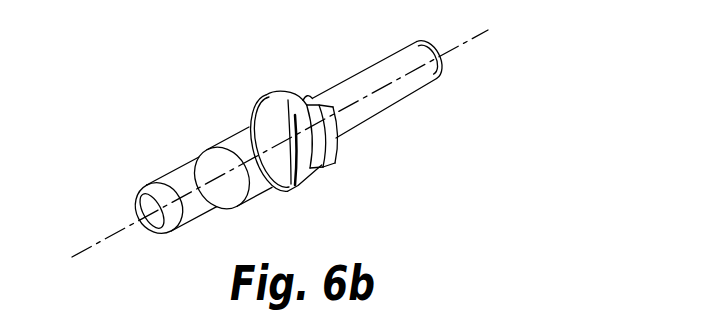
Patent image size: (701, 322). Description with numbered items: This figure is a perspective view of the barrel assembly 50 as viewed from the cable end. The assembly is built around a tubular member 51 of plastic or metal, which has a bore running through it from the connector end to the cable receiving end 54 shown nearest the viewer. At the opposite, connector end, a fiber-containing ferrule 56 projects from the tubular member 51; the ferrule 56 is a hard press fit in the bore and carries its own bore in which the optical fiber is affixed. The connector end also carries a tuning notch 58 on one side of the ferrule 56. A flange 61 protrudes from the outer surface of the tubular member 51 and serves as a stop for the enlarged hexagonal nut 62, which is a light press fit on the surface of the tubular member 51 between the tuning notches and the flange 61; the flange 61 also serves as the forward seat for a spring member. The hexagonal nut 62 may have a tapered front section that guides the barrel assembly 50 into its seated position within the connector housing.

The barrel assembly 50 is at (282, 80).
The tubular member 51 is at (215, 144).
The cable receiving end 54 is at (155, 192).
The ferrule 56 is at (411, 95).
The notch 58 is at (310, 100).
The flange 61 is at (336, 142).
The hexagonal nut 62 is at (255, 106).